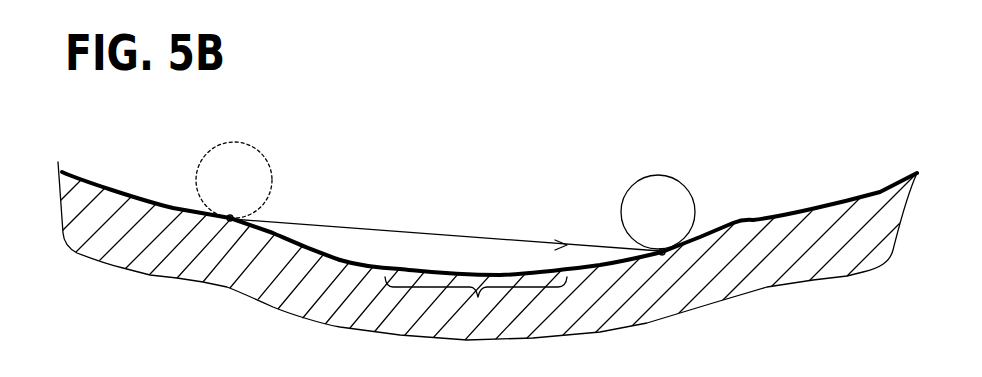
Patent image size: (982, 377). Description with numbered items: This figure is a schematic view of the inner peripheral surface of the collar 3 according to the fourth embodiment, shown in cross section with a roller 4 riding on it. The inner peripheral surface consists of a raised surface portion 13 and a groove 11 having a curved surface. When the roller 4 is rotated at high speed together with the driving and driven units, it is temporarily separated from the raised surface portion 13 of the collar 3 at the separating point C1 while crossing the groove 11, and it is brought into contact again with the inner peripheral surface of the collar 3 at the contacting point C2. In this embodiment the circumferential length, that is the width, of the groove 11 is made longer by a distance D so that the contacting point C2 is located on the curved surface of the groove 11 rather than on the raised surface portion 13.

The collar 3 is at (837, 240).
The roller 4 is at (240, 142).
The groove 11 is at (350, 263).
The raised surface portion 13 is at (231, 222).
The separating point C1 is at (228, 215).
The contacting point C2 is at (665, 248).
The distance D is at (476, 305).